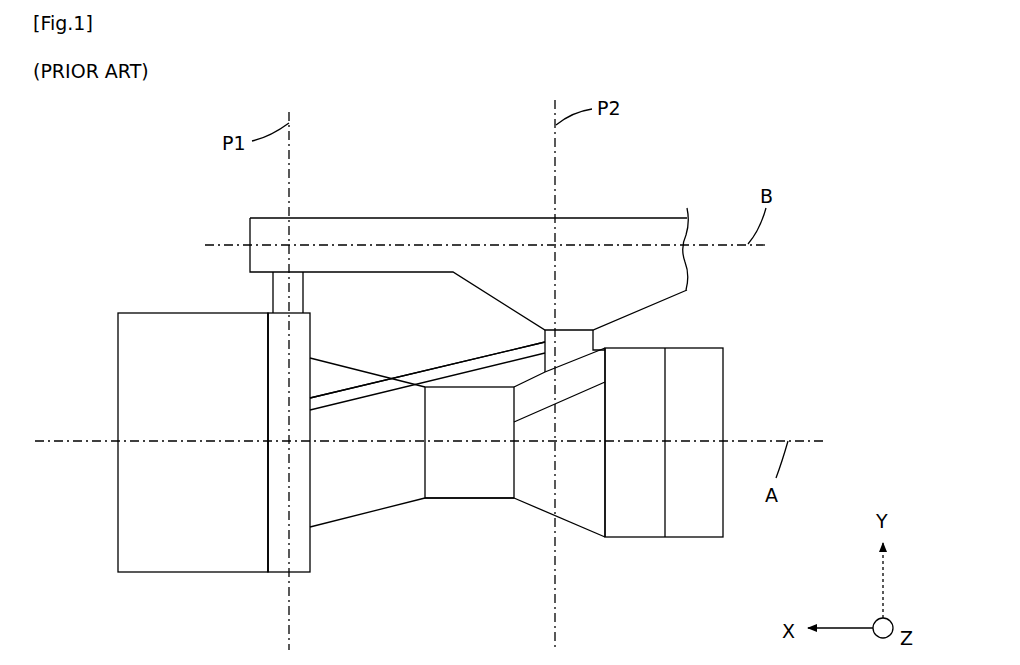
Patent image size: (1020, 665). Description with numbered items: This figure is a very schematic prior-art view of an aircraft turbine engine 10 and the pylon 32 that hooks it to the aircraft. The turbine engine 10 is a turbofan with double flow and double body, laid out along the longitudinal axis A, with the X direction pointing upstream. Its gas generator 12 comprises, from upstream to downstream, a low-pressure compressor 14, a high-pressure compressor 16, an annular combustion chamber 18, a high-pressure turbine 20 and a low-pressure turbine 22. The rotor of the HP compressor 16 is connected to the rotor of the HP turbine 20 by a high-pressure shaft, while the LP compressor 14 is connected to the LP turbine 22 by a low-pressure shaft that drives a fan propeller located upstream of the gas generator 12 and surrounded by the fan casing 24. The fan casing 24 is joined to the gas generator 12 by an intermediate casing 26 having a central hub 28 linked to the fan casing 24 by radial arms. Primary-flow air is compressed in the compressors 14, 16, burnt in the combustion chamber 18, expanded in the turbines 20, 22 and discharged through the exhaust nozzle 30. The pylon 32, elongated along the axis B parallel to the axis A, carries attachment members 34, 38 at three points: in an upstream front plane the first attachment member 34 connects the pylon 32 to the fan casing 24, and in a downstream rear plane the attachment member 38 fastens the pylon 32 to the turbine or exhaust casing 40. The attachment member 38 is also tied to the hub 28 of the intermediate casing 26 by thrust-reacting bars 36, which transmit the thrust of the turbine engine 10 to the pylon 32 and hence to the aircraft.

The turbine engine 10 is at (487, 409).
The gas generator 12 is at (445, 518).
The low-pressure compressor 14 is at (318, 511).
The high-pressure compressor 16 is at (395, 418).
The annular combustion chamber 18 is at (493, 483).
The high-pressure turbine 20 is at (543, 487).
The low-pressure turbine 22 is at (593, 503).
The fan casing 24 is at (203, 563).
The intermediate casing 26 is at (278, 576).
The central hub 28 is at (313, 377).
The exhaust nozzle 30 is at (702, 407).
The pylon 32 is at (652, 217).
The first attachment member 34 is at (296, 285).
The thrust-reacting bars 36 is at (337, 413).
The attachment member 38 is at (572, 348).
The turbine or exhaust casing 40 is at (569, 390).